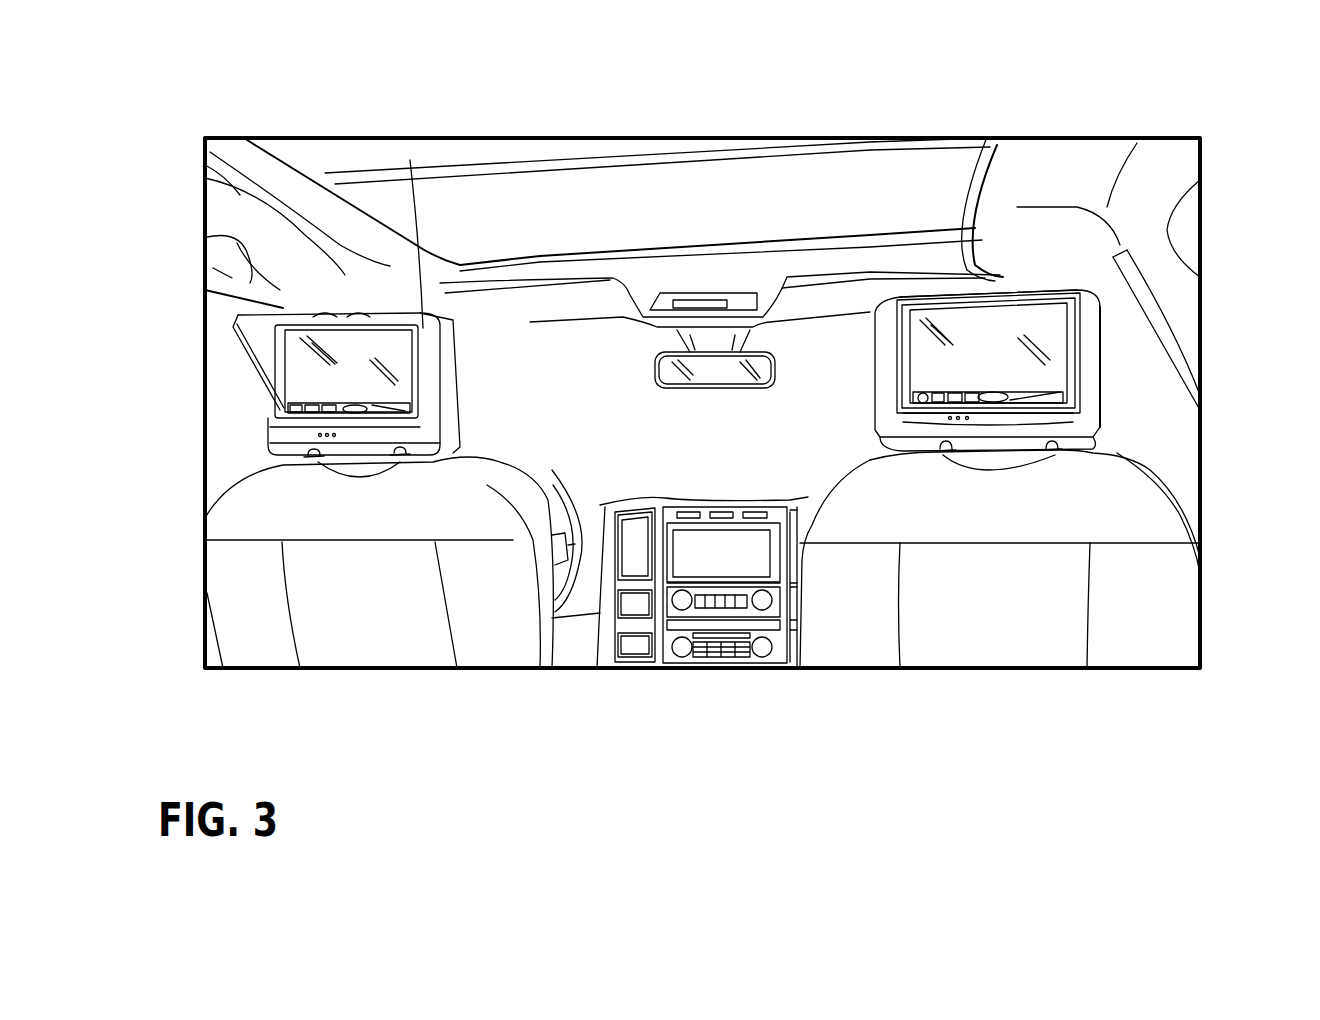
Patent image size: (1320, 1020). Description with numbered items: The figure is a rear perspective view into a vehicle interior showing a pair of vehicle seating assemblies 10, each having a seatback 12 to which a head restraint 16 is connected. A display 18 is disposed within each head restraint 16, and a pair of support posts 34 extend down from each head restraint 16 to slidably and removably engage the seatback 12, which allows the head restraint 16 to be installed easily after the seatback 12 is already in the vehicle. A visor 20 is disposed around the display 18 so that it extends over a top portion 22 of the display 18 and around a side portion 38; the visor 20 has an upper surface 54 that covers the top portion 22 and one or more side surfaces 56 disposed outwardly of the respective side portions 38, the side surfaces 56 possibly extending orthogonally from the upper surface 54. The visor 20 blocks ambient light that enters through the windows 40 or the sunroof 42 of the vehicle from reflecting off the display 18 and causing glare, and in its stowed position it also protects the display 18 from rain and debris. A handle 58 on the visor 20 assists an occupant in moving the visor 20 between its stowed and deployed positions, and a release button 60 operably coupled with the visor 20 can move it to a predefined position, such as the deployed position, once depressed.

The vehicle seating assembly 10 is at (265, 497).
The seatback 12 is at (242, 588).
The head restraint 16 is at (277, 430).
The display 18 is at (295, 348).
The visor 20 is at (253, 293).
The top portion 22 is at (1058, 332).
The support posts 34 is at (312, 457).
The side portion 38 is at (413, 383).
The windows 40 is at (407, 150).
The sunroof 42 is at (547, 152).
The upper surface 54 is at (245, 240).
The side surfaces 56 is at (360, 313).
The handle 58 is at (207, 172).
The release button 60 is at (322, 313).